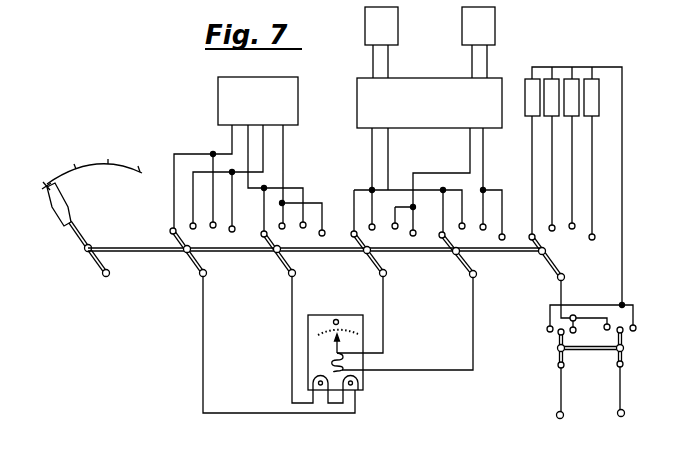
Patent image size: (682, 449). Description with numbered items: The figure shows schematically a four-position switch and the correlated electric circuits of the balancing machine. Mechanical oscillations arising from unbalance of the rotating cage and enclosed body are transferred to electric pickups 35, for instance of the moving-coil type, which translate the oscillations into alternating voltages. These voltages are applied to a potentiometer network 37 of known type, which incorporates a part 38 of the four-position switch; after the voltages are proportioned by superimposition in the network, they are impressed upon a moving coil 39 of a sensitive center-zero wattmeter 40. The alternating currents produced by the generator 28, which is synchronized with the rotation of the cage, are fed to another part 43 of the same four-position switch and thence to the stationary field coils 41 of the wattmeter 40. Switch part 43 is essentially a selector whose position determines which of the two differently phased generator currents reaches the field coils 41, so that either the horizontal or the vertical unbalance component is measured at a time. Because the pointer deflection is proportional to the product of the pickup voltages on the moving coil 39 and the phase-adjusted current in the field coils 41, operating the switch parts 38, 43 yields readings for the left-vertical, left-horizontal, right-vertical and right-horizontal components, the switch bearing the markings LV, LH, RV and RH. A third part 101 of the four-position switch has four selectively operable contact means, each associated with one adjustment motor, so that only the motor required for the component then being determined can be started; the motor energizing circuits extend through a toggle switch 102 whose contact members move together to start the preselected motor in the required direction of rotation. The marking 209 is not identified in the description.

The selector dial and knob 209 is at (147, 138).
The generator 28 is at (253, 77).
The electric pickups 35 is at (462, 23).
The potentiometer network 37 is at (433, 115).
The part of four-position switch 38 is at (433, 283).
The moving coil 39 is at (332, 359).
The wattmeter 40 is at (337, 315).
The stationary field coils 41 is at (313, 386).
The part of four-position switch 43 is at (250, 286).
The third part of four-position switch 101 is at (598, 270).
The toggle switch 102 is at (600, 382).